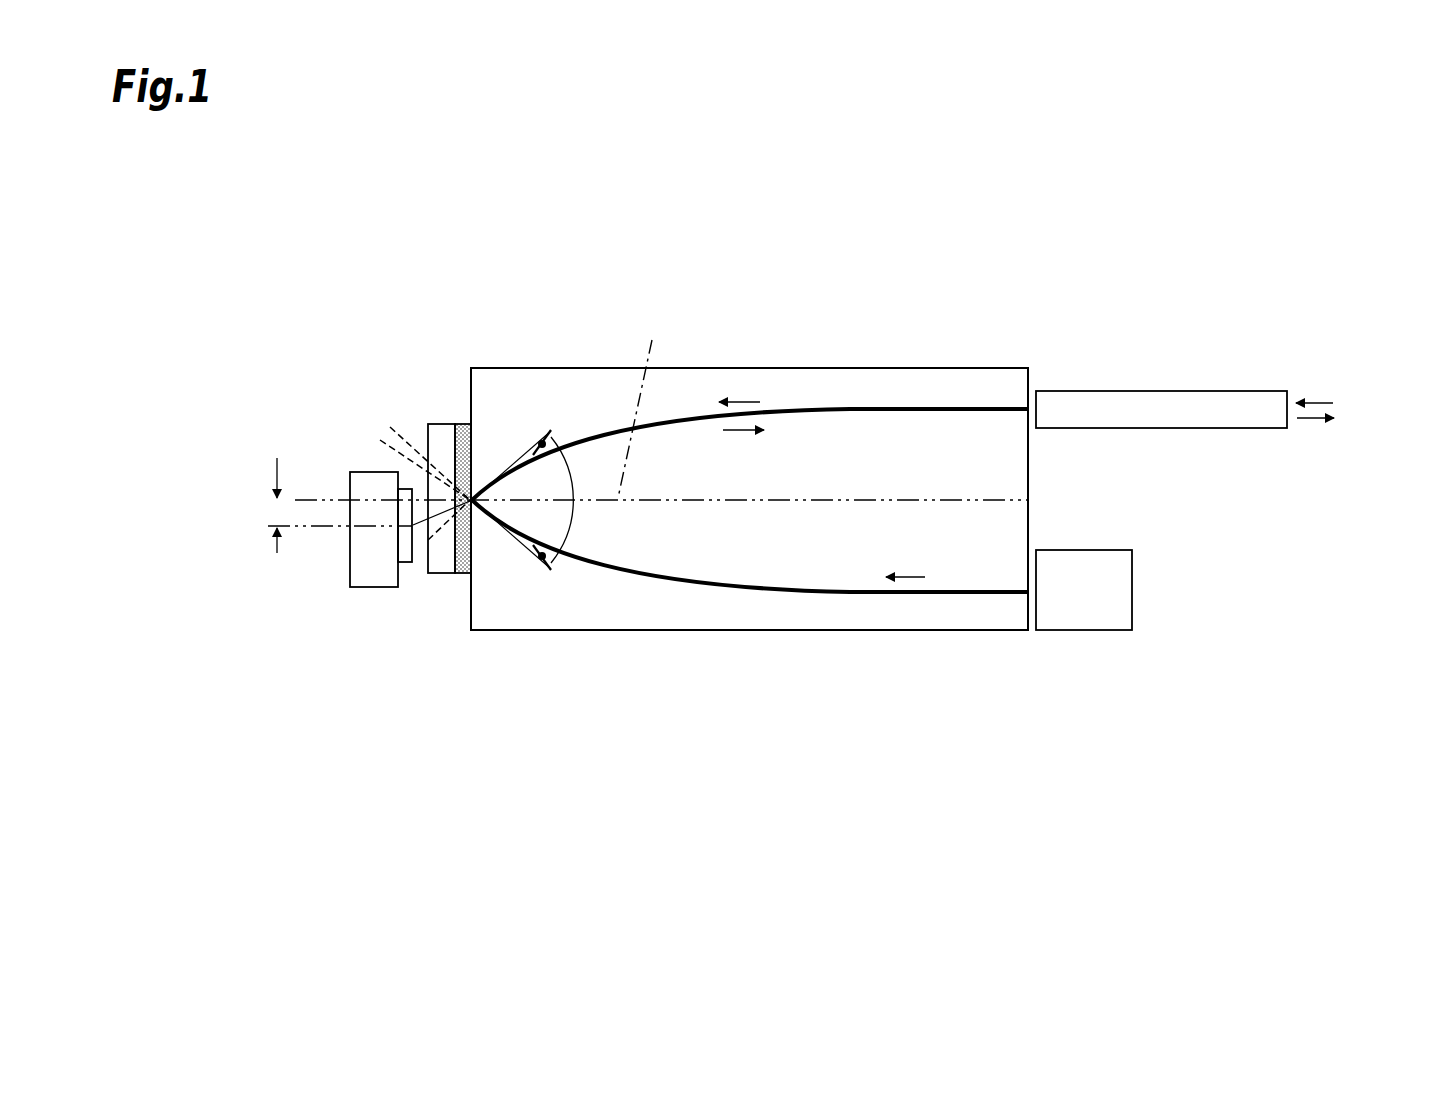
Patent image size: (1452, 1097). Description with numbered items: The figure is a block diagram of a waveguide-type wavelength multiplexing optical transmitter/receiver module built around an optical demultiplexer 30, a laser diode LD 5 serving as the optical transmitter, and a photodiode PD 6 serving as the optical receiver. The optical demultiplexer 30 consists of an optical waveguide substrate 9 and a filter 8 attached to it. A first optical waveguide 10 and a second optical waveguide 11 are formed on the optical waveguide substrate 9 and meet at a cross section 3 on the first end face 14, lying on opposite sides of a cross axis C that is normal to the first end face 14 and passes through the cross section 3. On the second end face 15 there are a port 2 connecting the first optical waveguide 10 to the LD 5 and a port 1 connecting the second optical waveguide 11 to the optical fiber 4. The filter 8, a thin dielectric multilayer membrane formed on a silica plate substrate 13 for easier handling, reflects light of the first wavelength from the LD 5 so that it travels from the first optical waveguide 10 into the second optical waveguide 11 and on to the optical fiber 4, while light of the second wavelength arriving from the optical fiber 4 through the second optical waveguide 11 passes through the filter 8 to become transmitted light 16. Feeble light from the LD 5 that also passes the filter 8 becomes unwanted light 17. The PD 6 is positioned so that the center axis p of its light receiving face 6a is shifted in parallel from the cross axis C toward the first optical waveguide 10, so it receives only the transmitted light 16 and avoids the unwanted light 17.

The port 1 is at (987, 407).
The port 2 is at (985, 592).
The cross section 3 is at (473, 497).
The optical fiber 4 is at (1212, 390).
The LD 5 is at (1132, 605).
The photodiode (PD) 6 is at (367, 588).
The light receiving face 6a is at (412, 563).
The filter 8 is at (462, 424).
The optical waveguide substrate 9 is at (762, 632).
The first optical waveguide 10 is at (845, 592).
The second optical waveguide 11 is at (853, 408).
The silica plate substrate 13 is at (443, 424).
The first end face 14 is at (473, 548).
The second end face 15 is at (1028, 516).
The transmitted light 16 is at (428, 540).
The unwanted light 17 is at (470, 500).
The optical demultiplexer 30 is at (911, 543).
The cross axis C is at (712, 401).
The center axis p is at (313, 533).